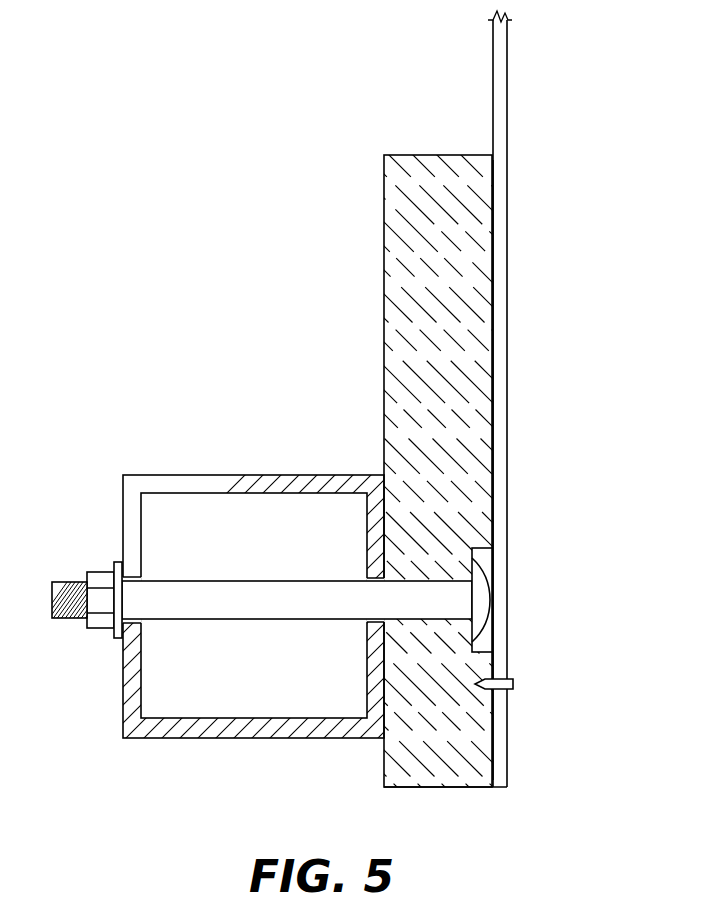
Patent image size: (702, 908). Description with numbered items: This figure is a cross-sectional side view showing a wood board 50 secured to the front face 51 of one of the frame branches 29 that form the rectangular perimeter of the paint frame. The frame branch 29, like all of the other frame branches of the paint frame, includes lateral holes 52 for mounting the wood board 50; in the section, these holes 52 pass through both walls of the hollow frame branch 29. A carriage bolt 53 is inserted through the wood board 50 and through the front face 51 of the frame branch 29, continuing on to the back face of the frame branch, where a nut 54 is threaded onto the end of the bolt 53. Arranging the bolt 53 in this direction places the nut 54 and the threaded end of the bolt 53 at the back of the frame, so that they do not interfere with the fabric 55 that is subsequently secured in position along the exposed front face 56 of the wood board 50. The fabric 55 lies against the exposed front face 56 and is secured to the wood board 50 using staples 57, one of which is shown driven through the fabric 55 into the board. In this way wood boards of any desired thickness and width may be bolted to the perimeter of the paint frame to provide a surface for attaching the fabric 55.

The wood board 50 is at (437, 155).
The fabric 55 is at (508, 328).
The exposed front face 56 is at (493, 436).
The frame branch 29 is at (253, 475).
The lateral holes 52 is at (139, 568).
The front face 51 is at (384, 660).
The carriage bolt 53 is at (490, 575).
The nut 54 is at (100, 572).
The staples 57 is at (514, 684).